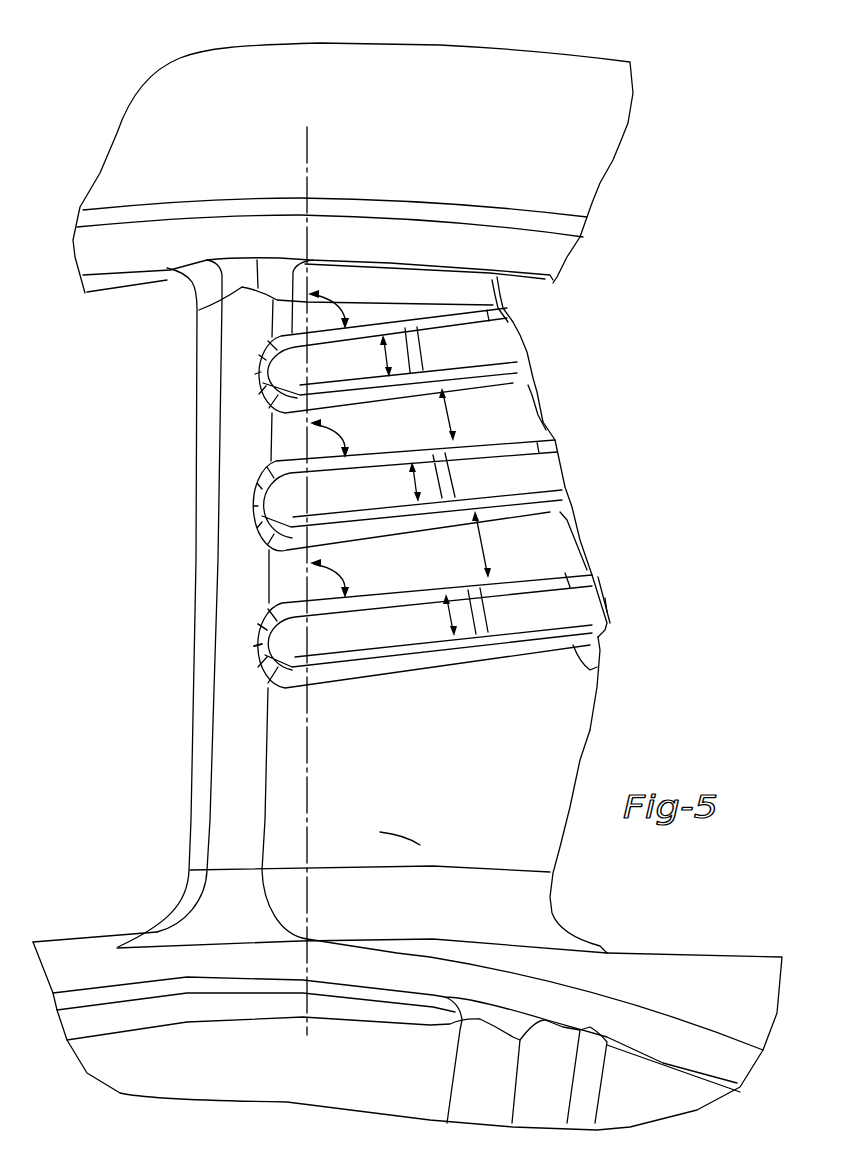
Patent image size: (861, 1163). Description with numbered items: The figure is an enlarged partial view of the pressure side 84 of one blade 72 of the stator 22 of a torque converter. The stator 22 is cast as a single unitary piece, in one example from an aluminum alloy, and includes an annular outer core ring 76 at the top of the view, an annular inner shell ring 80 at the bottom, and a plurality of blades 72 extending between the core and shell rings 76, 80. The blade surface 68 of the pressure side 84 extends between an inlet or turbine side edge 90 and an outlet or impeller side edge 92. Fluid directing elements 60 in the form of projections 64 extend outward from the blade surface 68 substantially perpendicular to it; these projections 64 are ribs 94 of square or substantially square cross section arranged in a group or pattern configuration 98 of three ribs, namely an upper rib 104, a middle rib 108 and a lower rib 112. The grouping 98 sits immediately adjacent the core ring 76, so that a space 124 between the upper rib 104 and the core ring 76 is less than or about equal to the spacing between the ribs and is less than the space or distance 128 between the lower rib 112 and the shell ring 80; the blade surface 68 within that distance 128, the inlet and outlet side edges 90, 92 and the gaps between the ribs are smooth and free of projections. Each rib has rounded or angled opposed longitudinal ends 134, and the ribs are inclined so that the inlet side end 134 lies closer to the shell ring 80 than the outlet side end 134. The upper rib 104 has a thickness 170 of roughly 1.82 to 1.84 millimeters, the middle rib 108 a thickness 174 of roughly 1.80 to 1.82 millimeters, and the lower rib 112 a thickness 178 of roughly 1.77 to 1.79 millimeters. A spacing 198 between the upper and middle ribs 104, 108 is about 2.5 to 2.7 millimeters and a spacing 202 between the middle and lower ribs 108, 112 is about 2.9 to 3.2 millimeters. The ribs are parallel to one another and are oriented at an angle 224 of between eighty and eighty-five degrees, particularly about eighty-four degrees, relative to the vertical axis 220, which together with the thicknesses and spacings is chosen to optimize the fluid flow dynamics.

The stator 22 is at (626, 32).
The vertical axis 220 is at (308, 150).
The annular outer core ring 76 is at (500, 202).
The fluid directing elements 60 is at (532, 328).
The outlet or impeller side edge 92 is at (533, 397).
The projections 64 is at (563, 451).
The ribs 94 is at (605, 571).
The opposed longitudinal ends 134 is at (293, 645).
The blade surface 68 is at (513, 703).
The pressure side 84 is at (475, 781).
The space or distance 128 is at (420, 845).
The annular inner shell ring 80 is at (200, 963).
The space 124 is at (290, 318).
The upper rib 104 is at (293, 375).
The group or pattern configuration 98 is at (247, 450).
The middle rib 108 is at (293, 502).
The inlet or turbine side edge 90 is at (215, 580).
The blade 72 is at (193, 656).
The lower rib 112 is at (290, 645).
The angle 224 is at (349, 308).
The thickness 170 is at (393, 350).
The thickness 174 is at (430, 478).
The thickness 178 is at (463, 610).
The spacing 198 is at (453, 413).
The spacing 202 is at (493, 550).